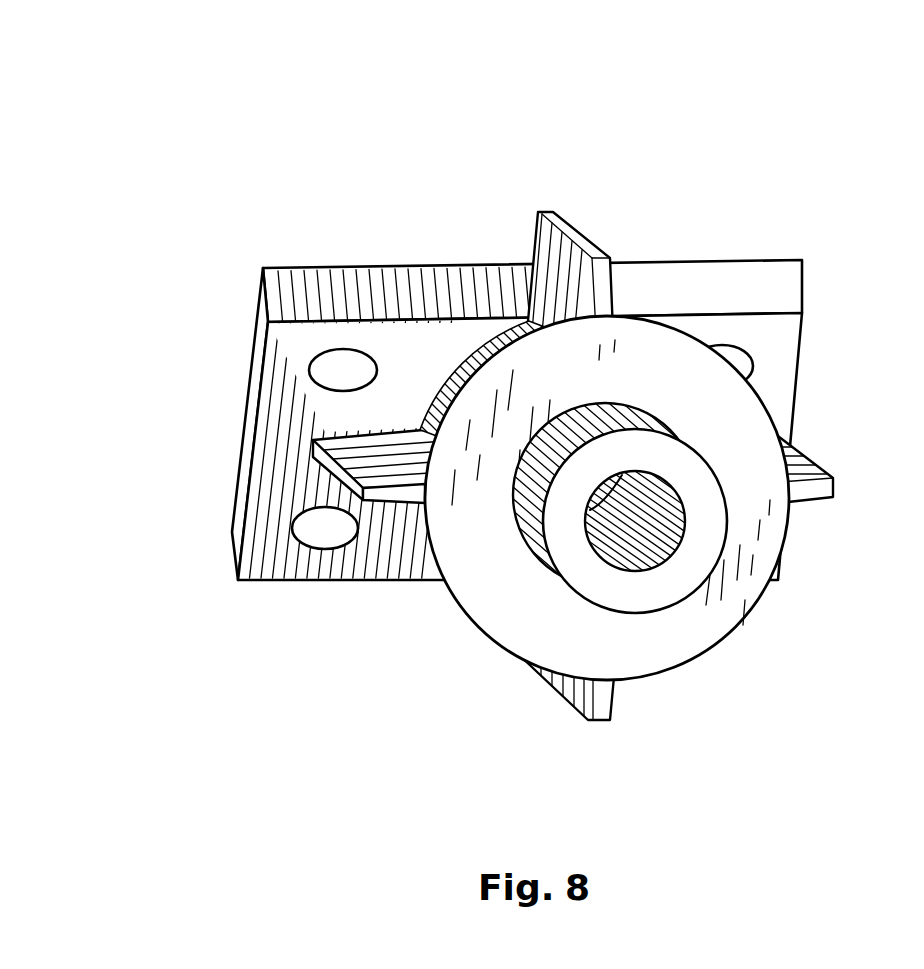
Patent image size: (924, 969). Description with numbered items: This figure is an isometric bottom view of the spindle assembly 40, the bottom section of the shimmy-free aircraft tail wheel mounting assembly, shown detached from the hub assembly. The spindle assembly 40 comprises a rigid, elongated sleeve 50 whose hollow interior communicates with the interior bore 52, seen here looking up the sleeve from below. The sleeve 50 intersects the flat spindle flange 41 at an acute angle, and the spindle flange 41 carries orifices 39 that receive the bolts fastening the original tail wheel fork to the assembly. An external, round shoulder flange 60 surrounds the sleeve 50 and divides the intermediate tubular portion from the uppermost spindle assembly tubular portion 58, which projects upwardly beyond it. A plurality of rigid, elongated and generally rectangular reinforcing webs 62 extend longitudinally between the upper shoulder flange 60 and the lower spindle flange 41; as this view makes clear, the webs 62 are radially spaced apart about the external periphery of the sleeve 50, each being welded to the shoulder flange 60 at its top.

The orifices 39 is at (308, 532).
The spindle assembly 40 is at (617, 140).
The spindle flange 41 is at (384, 570).
The sleeve 50 is at (690, 578).
The interior bore 52 is at (660, 522).
The uppermost spindle assembly tubular portion 58 is at (573, 563).
The shoulder flange 60 is at (732, 433).
The reinforcing webs 62 is at (570, 254).